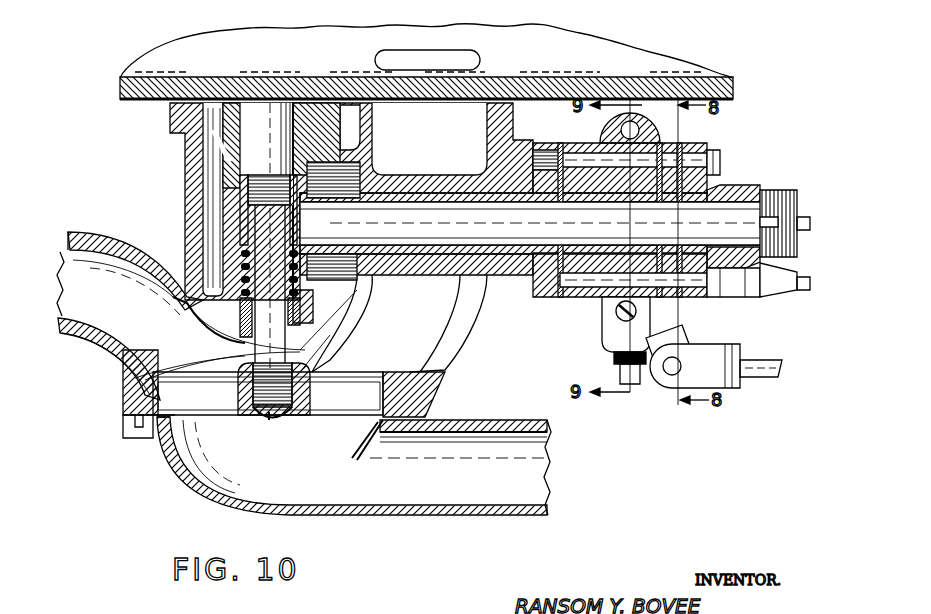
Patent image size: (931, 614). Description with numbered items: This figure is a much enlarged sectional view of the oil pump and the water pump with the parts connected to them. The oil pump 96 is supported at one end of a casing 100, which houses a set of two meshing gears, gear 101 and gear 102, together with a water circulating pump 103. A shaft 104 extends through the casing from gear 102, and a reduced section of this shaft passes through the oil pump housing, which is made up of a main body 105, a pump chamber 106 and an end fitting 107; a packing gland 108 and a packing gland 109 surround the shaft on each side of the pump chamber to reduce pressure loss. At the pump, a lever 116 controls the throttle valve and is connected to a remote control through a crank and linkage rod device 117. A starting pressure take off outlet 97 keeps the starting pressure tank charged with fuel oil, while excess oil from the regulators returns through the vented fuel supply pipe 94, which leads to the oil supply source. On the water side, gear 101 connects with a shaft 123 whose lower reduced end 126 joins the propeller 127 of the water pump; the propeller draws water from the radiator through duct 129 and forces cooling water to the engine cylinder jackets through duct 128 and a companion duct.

The oil pump 96 is at (650, 110).
The gear 101 is at (200, 152).
The shaft 123 is at (252, 122).
The gear 102 is at (270, 188).
The shaft 104 is at (447, 228).
The main body 105 is at (642, 147).
The pump chamber 106 is at (686, 165).
The end fitting 107 is at (712, 197).
The starting pressure take off outlet 97 is at (812, 216).
The packing gland 109 is at (748, 286).
The pipe 94 is at (804, 282).
The packing gland 108 is at (562, 300).
The lever 116 is at (658, 350).
The crank and linkage rod device 117 is at (714, 380).
The duct 128 is at (86, 262).
The lower reduced end 126 is at (200, 333).
The water circulating pump 103 is at (157, 458).
The propeller 127 is at (228, 400).
The duct 129 is at (530, 490).
The casing 100 is at (456, 324).